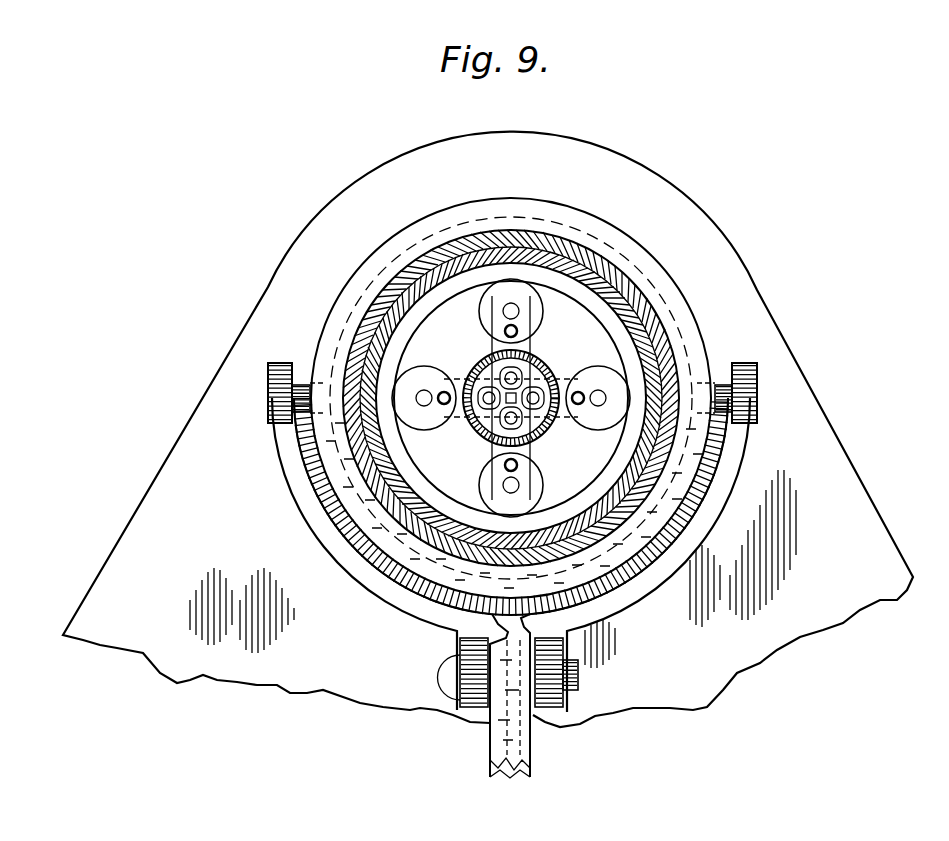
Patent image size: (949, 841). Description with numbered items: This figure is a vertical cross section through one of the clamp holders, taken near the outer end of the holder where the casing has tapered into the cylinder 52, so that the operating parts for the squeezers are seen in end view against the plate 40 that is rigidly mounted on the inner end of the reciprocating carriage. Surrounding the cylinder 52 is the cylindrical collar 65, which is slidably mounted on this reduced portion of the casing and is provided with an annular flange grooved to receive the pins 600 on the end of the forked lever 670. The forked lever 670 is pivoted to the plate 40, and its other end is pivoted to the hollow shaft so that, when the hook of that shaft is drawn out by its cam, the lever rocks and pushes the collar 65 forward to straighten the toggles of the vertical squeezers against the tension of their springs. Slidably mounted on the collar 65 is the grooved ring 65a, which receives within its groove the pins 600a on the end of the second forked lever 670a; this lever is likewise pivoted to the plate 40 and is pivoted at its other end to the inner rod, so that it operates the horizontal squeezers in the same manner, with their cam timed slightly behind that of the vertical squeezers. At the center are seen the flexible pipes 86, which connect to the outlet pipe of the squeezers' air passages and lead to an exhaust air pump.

The plate 40 is at (692, 224).
The grooved ring 65a is at (648, 272).
The cylinder 52 is at (655, 316).
The pins 600 is at (733, 360).
The cylindrical collar 65 is at (673, 443).
The pins 600a is at (303, 387).
The flexible pipes 86 is at (533, 343).
The forked lever 670a is at (392, 593).
The forked lever 670 is at (652, 580).